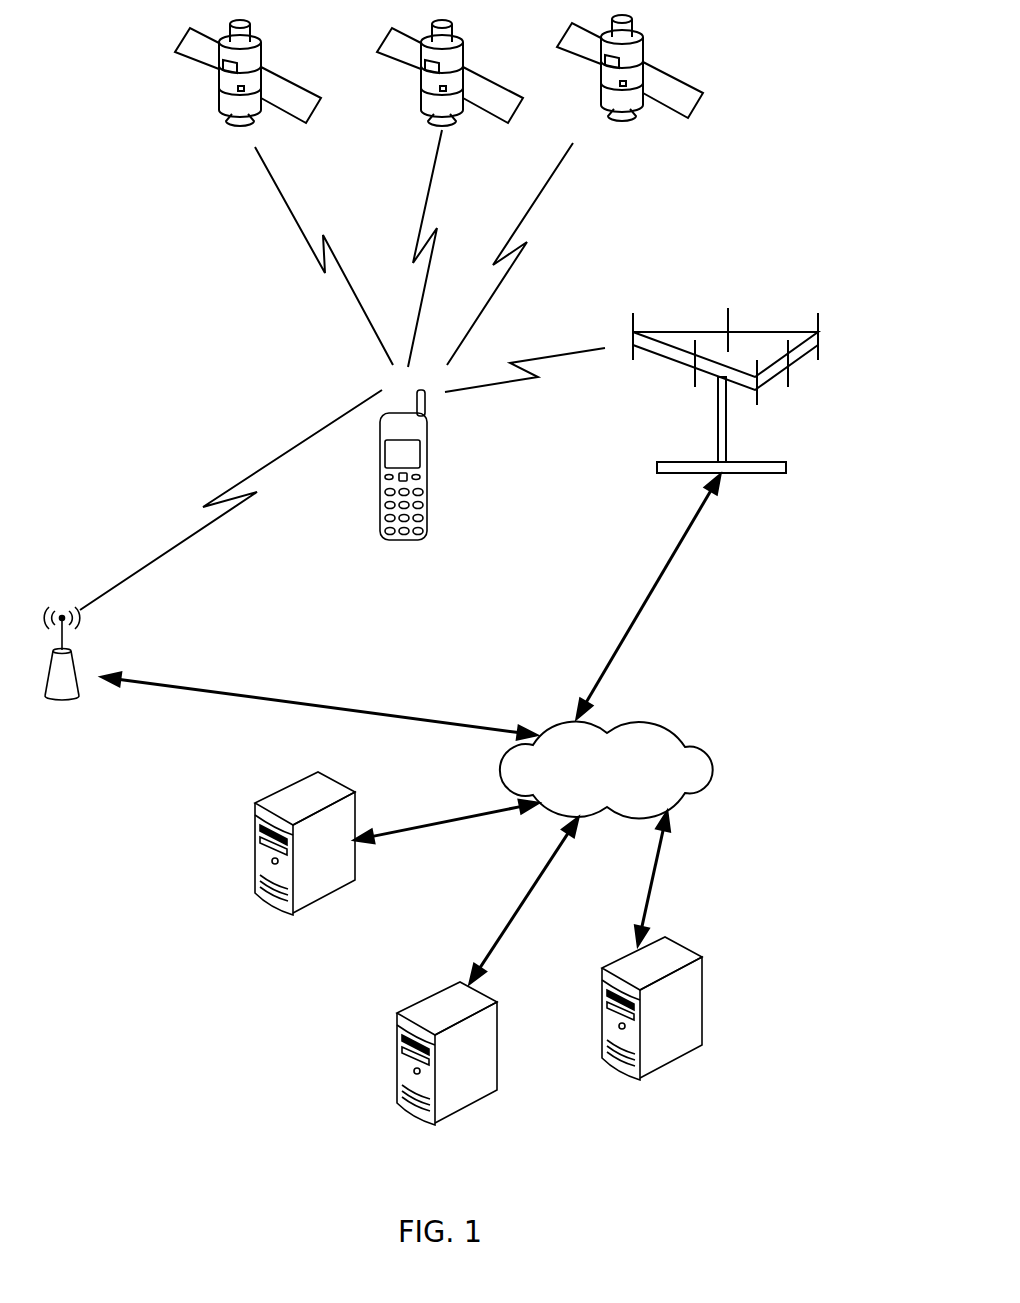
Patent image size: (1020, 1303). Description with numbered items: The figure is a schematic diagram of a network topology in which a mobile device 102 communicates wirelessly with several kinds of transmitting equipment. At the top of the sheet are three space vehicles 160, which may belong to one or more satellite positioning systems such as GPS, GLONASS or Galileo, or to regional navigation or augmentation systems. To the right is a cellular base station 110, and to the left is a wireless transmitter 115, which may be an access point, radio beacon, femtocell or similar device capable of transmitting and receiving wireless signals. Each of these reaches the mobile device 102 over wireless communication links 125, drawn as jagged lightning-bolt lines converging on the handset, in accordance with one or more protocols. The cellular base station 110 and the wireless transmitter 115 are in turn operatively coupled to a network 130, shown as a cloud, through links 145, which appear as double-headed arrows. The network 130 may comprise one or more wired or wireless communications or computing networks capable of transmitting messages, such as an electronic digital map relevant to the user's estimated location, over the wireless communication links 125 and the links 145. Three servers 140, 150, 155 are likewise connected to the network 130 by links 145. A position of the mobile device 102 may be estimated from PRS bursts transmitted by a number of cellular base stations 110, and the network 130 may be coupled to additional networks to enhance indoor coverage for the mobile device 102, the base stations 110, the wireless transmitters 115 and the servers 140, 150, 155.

The mobile device 102 is at (380, 470).
The cellular base station 110 is at (757, 474).
The wireless transmitter 115 is at (58, 698).
The wireless communication links 125 is at (286, 194).
The network 130 is at (696, 746).
The server 140 is at (335, 775).
The communication links 145 is at (268, 700).
The server 150 is at (702, 958).
The server 155 is at (495, 1003).
The space vehicles 160 is at (148, 89).